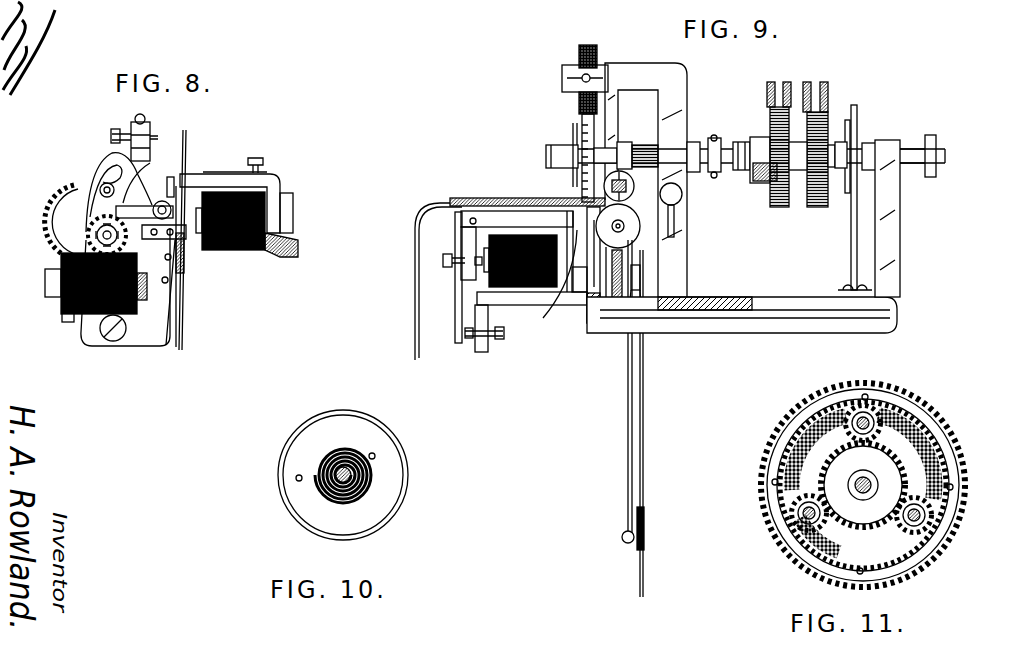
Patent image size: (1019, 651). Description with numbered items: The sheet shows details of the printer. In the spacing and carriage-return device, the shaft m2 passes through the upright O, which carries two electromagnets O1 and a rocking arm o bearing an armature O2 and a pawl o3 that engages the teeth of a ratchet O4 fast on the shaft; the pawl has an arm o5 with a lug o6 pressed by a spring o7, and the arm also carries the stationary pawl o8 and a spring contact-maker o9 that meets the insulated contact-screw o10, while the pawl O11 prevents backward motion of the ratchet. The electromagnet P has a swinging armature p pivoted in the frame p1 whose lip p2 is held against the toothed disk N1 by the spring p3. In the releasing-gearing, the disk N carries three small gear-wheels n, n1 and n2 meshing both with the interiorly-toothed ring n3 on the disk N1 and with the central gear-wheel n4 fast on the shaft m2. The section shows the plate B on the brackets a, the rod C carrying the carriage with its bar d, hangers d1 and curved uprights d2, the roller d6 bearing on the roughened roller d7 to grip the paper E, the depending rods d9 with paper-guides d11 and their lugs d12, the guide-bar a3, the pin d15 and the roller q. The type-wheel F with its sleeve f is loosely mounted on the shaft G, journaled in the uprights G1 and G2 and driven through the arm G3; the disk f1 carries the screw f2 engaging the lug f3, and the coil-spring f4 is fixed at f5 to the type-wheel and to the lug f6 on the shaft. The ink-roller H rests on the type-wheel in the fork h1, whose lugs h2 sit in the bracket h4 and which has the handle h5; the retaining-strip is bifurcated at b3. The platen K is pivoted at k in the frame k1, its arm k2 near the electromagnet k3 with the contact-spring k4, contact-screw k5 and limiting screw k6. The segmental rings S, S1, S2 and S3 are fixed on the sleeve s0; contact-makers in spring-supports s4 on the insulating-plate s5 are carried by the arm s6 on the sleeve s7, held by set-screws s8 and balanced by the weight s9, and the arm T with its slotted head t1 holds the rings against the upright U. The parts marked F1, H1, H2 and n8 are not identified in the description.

In FIG. 8, the upright O is at (103, 178).
In FIG. 8, the disk N is at (58, 190).
In FIG. 8, the ratchet O4 is at (92, 232).
In FIG. 8, the gear n8 is at (98, 232).
In FIG. 8, the pawl O11 is at (98, 183).
In FIG. 8, the contact-screw o10 is at (152, 133).
In FIG. 8, the pawl o3 is at (158, 200).
In FIG. 8, the spring contact-maker o9 is at (187, 135).
In FIG. 8, the lug o6 is at (186, 170).
In FIG. 8, the upwardly-extending arm o5 is at (192, 172).
In FIG. 8, the electromagnets O1 is at (72, 316).
In FIG. 8, the armature O2 is at (168, 335).
In FIG. 8, the rocking arm o is at (166, 302).
In FIG. 8, the spring o7 is at (168, 262).
In FIG. 8, the auxiliary stationary pawl o8 is at (183, 252).
In FIG. 8, the lip p2 is at (188, 240).
In FIG. 8, the electromagnet P is at (282, 213).
In FIG. 8, the spring p3 is at (262, 174).
In FIG. 8, the frame p1 is at (268, 186).
In FIG. 8, the swinging armature p is at (245, 163).
In FIG. 8, the base plate H2 is at (287, 256).
In FIG. 9, the base plate H2 is at (758, 326).
In FIG. 9, the supporting-bracket h4 is at (628, 70).
In FIG. 9, the ink-roller H is at (595, 52).
In FIG. 9, the fork h1 is at (575, 72).
In FIG. 9, the lugs h2 is at (562, 78).
In FIG. 9, the rod or handle h5 is at (562, 88).
In FIG. 9, the scale bar F1 is at (596, 128).
In FIG. 9, the disk f1 is at (571, 140).
In FIG. 9, the shaft G is at (546, 157).
In FIG. 10, the shaft G is at (345, 465).
In FIG. 9, the sleeve f is at (605, 140).
In FIG. 9, the roller d6 is at (640, 142).
In FIG. 9, the roughened roller d7 is at (634, 186).
In FIG. 9, the brackets a is at (552, 200).
In FIG. 9, the coil-spring f4 is at (575, 199).
In FIG. 10, the coil-spring f4 is at (333, 445).
In FIG. 9, the bifurcation b3 is at (572, 203).
In FIG. 9, the plate B is at (485, 215).
In FIG. 9, the frame k1 is at (452, 203).
In FIG. 9, the pivot k is at (465, 218).
In FIG. 9, the depending metallic arm k2 is at (466, 243).
In FIG. 9, the paper E is at (414, 276).
In FIG. 9, the screw k6 is at (449, 268).
In FIG. 9, the contact-spring k4 is at (455, 322).
In FIG. 9, the platen K is at (583, 285).
In FIG. 9, the electromagnet k3 is at (530, 287).
In FIG. 9, the contact-screw k5 is at (467, 345).
In FIG. 9, the column H1 is at (591, 315).
In FIG. 9, the guide-bar a3 is at (612, 325).
In FIG. 9, the rod C is at (628, 226).
In FIG. 9, the vertical hangers d1 is at (630, 230).
In FIG. 9, the upright G1 is at (672, 241).
In FIG. 9, the curved uprights d2 is at (632, 232).
In FIG. 9, the lug or pin d15 is at (642, 290).
In FIG. 9, the depending rods d9 is at (628, 414).
In FIG. 9, the carriage-bar d is at (560, 372).
In FIG. 9, the roller q is at (604, 372).
In FIG. 9, the adjustable paper-guides d11 is at (645, 525).
In FIG. 9, the lugs d12 is at (622, 538).
In FIG. 9, the sleeve s7 is at (741, 143).
In FIG. 9, the set-screws s8 is at (714, 178).
In FIG. 9, the counterbalance-weight s9 is at (762, 182).
In FIG. 9, the insulating-plate s5 is at (760, 132).
In FIG. 9, the arm s6 is at (728, 214).
In FIG. 9, the segmental ring S is at (770, 84).
In FIG. 9, the segmental ring S1 is at (786, 84).
In FIG. 9, the segmental ring S2 is at (807, 84).
In FIG. 9, the segmental ring S3 is at (826, 84).
In FIG. 9, the spring-supports s4 is at (842, 112).
In FIG. 9, the head t1 is at (847, 193).
In FIG. 9, the sleeve s0 is at (848, 150).
In FIG. 9, the upright U is at (858, 130).
In FIG. 9, the upright G2 is at (901, 236).
In FIG. 9, the arm T is at (931, 137).
In FIG. 9, the arm G3 is at (946, 158).
In FIG. 10, the type-wheel F is at (385, 432).
In FIG. 10, the spring attachment point f5 is at (376, 455).
In FIG. 10, the lug f6 is at (353, 478).
In FIG. 10, the lug f3 is at (296, 477).
In FIG. 10, the screw f2 is at (297, 480).
In FIG. 11, the toothed disk N1 is at (938, 395).
In FIG. 11, the interiorly-toothed ring n3 is at (948, 472).
In FIG. 11, the central gear-wheel n4 is at (890, 465).
In FIG. 11, the gear-wheel n is at (880, 398).
In FIG. 11, the gear-wheel n2 is at (798, 518).
In FIG. 11, the gear-wheel n1 is at (926, 515).
In FIG. 11, the shaft m2 is at (855, 485).